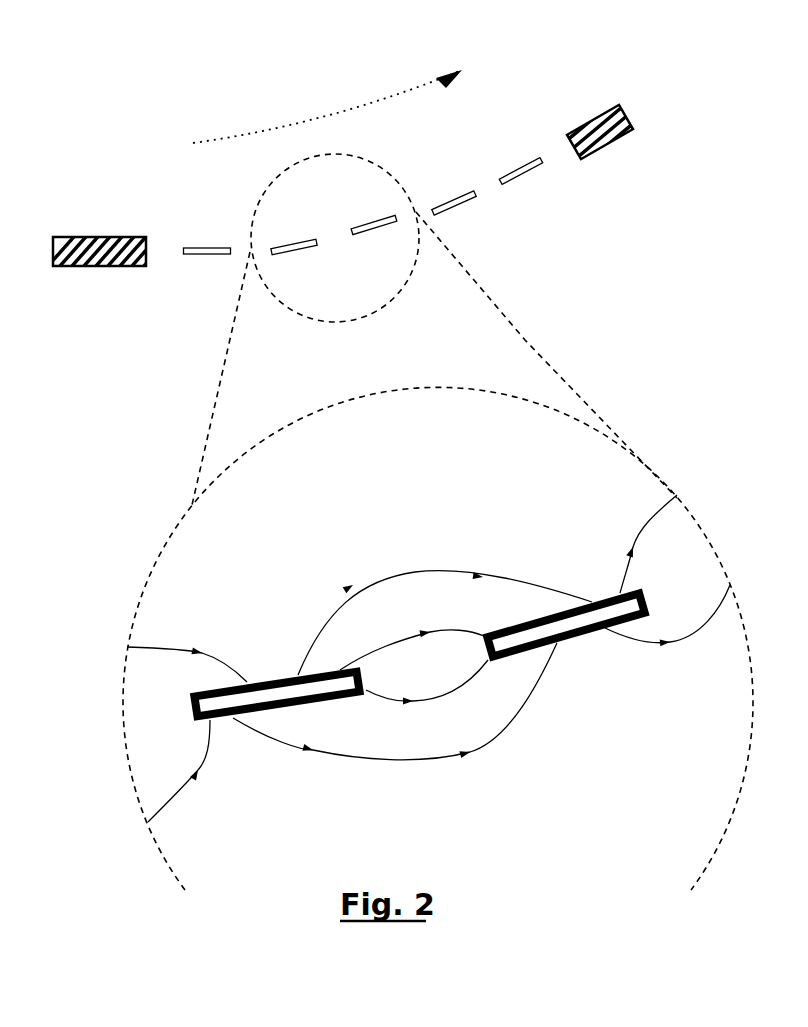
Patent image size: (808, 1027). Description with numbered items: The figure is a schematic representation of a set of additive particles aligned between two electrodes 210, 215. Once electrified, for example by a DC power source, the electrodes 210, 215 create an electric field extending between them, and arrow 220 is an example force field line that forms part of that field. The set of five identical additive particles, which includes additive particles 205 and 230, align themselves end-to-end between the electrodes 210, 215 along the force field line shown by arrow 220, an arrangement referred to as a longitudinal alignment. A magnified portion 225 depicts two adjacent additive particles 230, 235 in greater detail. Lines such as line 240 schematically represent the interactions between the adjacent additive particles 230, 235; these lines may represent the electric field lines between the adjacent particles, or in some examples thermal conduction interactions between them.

The additive particle 205 is at (190, 256).
The electrode 210 is at (83, 268).
The electrode 215 is at (612, 150).
The arrow 220 is at (222, 142).
The magnified portion 225 is at (648, 467).
The additive particle 230 is at (265, 680).
The additive particle 235 is at (595, 636).
The line 240 is at (413, 572).